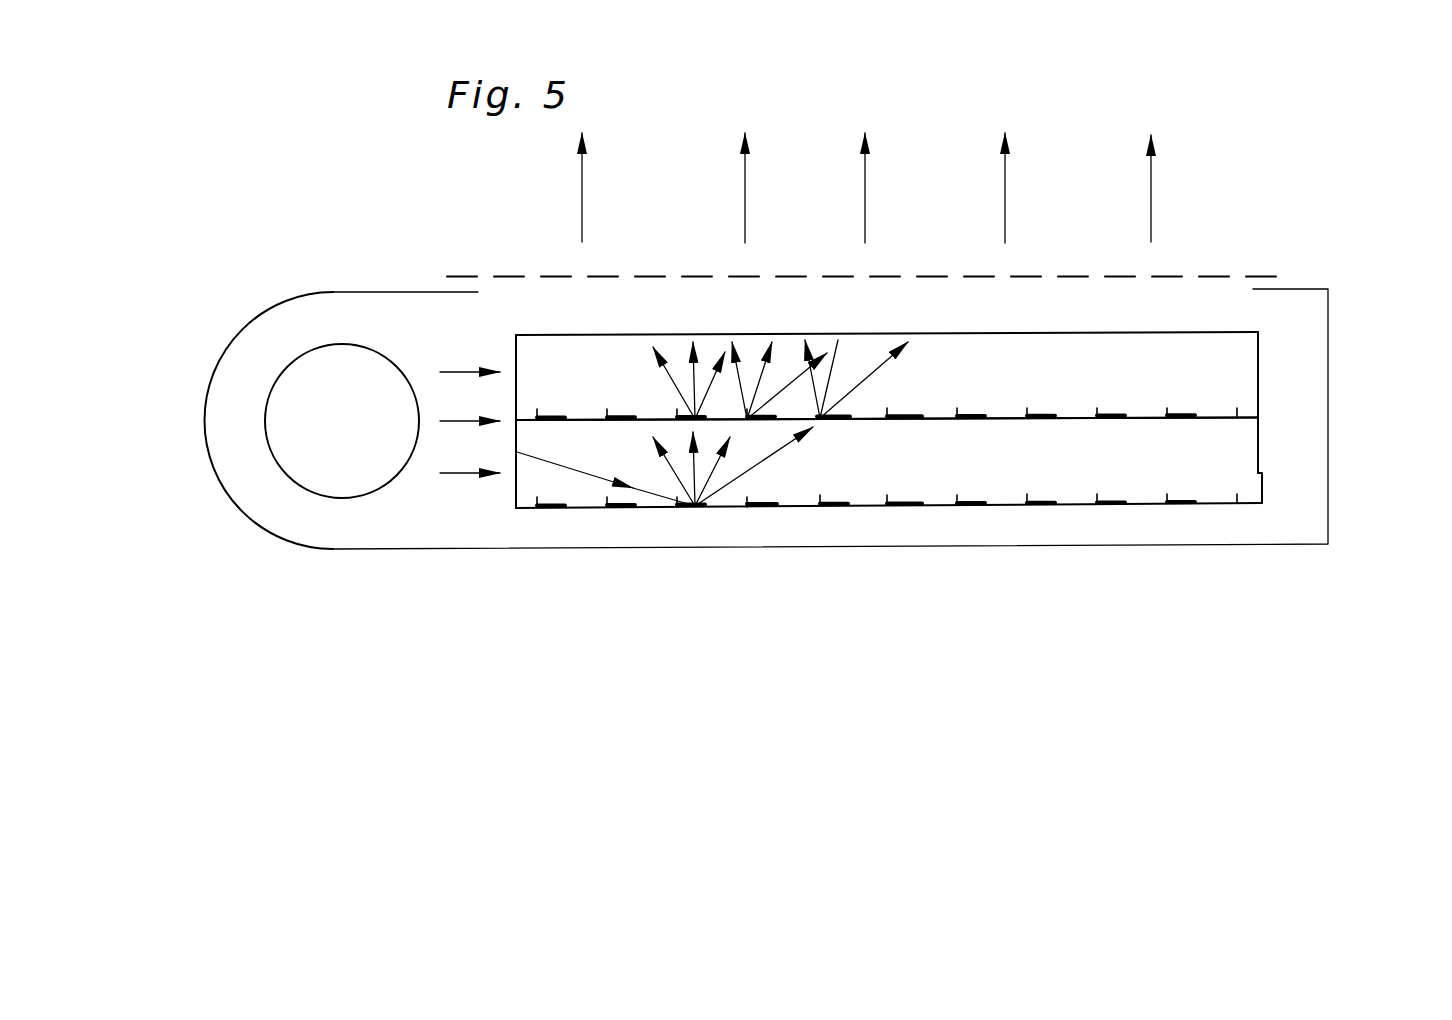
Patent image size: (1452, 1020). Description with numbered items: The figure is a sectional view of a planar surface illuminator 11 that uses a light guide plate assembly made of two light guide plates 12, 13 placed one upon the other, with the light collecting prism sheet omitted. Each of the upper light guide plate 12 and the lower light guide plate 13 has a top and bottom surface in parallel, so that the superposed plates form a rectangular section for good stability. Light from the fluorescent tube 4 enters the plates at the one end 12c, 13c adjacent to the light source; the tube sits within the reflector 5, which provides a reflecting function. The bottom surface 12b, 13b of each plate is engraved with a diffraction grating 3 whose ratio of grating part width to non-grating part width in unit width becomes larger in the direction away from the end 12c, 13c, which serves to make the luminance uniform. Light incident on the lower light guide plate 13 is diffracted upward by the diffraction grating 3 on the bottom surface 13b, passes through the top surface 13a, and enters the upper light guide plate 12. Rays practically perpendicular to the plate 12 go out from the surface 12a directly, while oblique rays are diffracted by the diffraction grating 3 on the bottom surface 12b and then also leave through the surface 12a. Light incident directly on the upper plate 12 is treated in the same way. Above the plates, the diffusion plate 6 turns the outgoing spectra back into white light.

The diffraction grating 3 is at (888, 412).
The fluorescent tube 4 is at (315, 500).
The reflector 5 is at (717, 548).
The diffusion plate 6 is at (1196, 277).
The planar surface illuminator 11 is at (1317, 250).
The upper light guide plate 12 is at (1262, 375).
The top surface of upper light guide plate 12a is at (1168, 334).
The bottom surface of upper light guide plate 12b is at (1188, 420).
The end of upper light guide plate 12c is at (516, 370).
The lower light guide plate 13 is at (1265, 476).
The top surface of lower light guide plate 13a is at (1145, 419).
The bottom surface of lower light guide plate 13b is at (1140, 504).
The end of lower light guide plate 13c is at (518, 492).